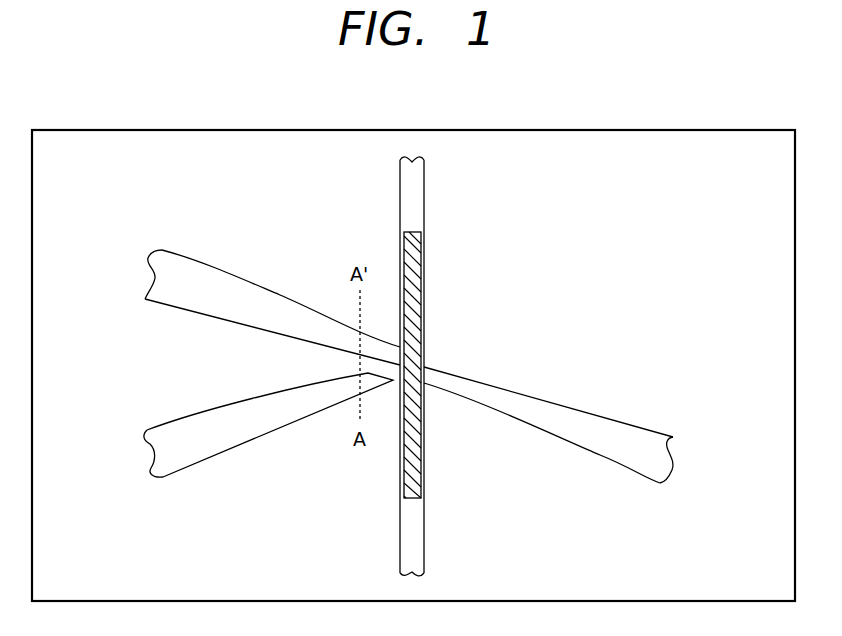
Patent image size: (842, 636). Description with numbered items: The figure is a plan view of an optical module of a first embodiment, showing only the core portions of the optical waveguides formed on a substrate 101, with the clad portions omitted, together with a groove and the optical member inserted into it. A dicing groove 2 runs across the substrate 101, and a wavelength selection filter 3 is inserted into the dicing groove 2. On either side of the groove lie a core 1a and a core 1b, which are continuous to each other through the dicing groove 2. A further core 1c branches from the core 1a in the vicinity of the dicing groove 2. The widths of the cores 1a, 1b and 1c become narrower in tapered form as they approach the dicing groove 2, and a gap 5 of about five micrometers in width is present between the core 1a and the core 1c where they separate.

The substrate 101 is at (720, 131).
The dicing groove 2 is at (413, 207).
The wavelength selection filter 3 is at (414, 487).
The core 1a is at (183, 266).
The core 1b is at (643, 437).
The core 1c is at (185, 458).
The gap 5 is at (382, 369).